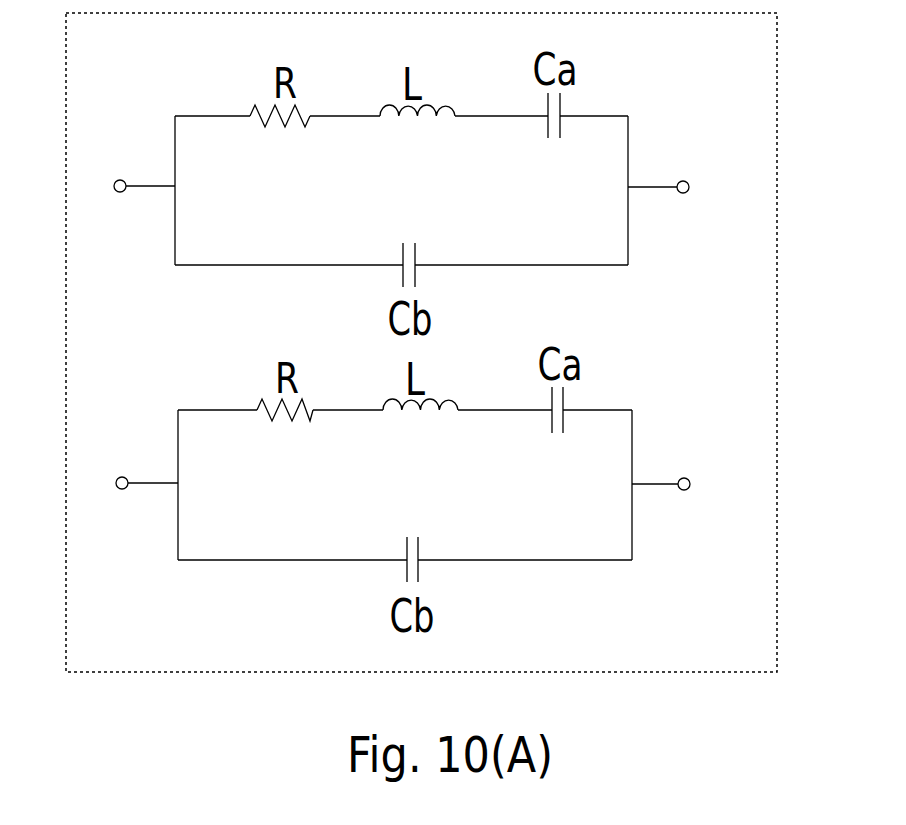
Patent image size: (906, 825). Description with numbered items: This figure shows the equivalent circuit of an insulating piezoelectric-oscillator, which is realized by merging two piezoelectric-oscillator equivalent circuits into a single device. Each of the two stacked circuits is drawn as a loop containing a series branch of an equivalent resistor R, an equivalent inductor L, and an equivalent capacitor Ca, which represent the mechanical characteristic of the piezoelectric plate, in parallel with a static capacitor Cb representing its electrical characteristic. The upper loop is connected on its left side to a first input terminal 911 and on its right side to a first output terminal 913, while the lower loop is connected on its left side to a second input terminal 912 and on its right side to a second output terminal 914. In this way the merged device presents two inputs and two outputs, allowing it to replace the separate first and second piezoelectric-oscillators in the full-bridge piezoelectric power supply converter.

The first input terminal 911 is at (137, 185).
The second input terminal 912 is at (142, 482).
The first output terminal 913 is at (660, 187).
The second output terminal 914 is at (663, 480).